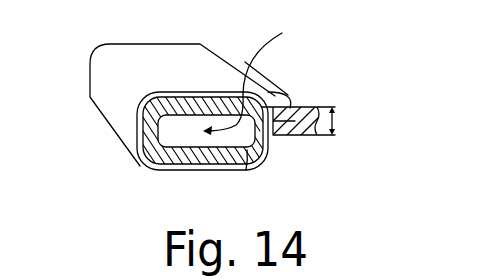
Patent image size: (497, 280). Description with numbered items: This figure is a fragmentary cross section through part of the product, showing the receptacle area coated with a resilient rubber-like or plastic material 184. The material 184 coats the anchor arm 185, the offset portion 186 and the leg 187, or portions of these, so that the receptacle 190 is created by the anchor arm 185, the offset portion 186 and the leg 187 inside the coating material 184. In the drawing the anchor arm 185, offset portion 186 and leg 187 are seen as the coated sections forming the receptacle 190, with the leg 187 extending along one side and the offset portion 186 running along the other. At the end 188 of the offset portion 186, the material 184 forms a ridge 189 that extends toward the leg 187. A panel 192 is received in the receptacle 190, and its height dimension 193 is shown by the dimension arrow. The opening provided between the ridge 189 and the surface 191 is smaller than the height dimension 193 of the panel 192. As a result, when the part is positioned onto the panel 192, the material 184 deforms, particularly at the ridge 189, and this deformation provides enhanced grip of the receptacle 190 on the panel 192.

The resilient rubber-like or plastic material 184 is at (173, 168).
The anchor arm 185 is at (138, 131).
The offset portion 186 is at (205, 158).
The leg 187 is at (216, 105).
The end of the offset portion 188 is at (268, 150).
The ridge 189 is at (282, 128).
The receptacle 190 is at (260, 76).
The surface 191 is at (276, 134).
The panel 192 is at (290, 93).
The height dimension 193 is at (337, 124).